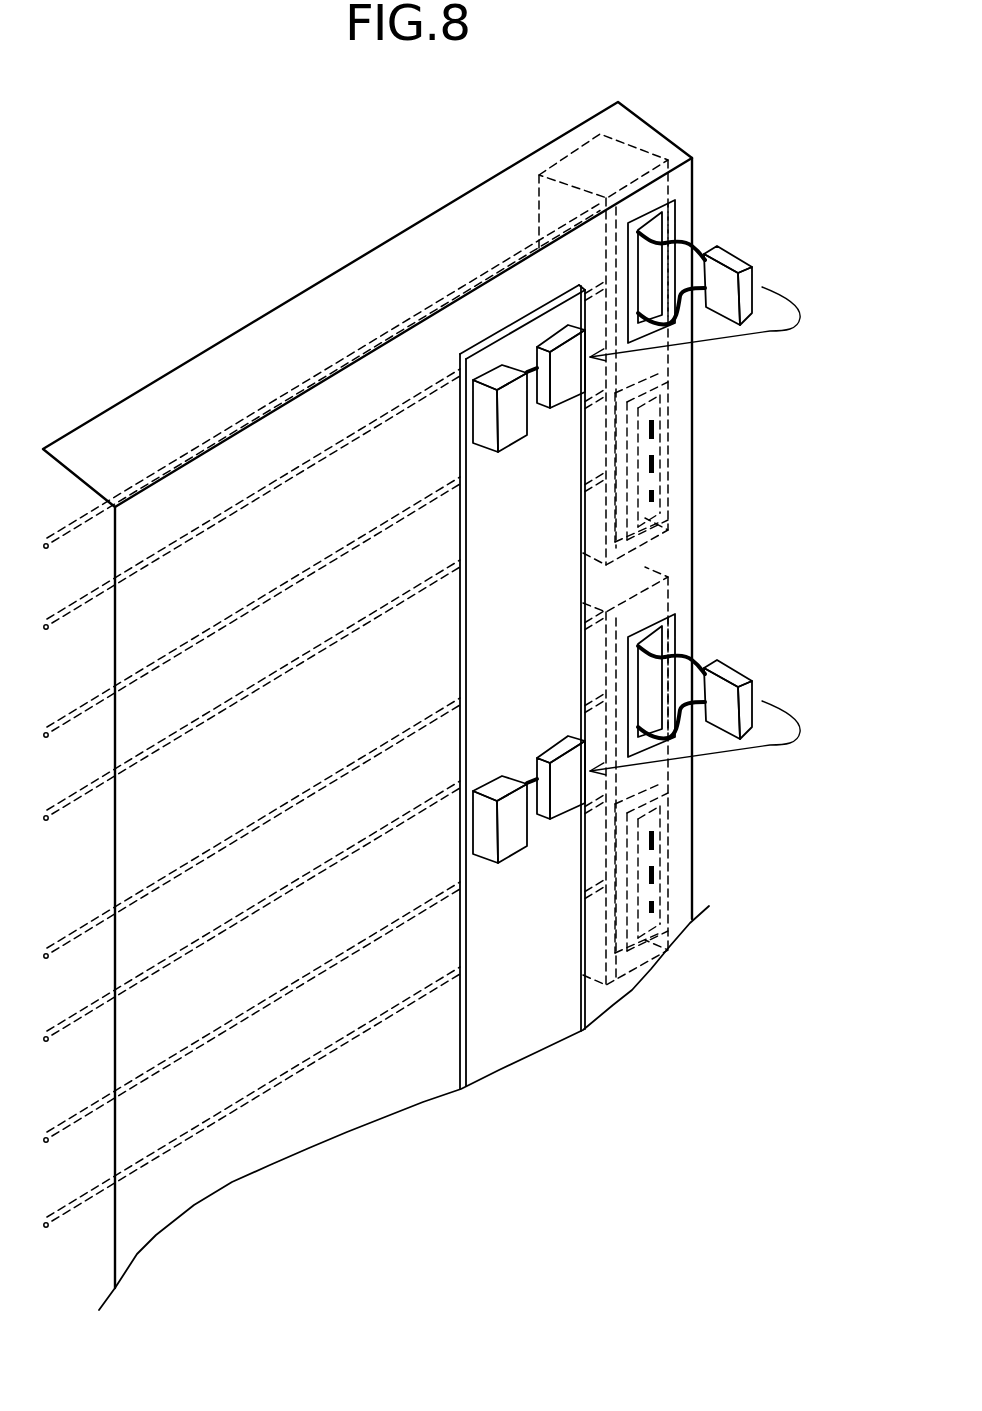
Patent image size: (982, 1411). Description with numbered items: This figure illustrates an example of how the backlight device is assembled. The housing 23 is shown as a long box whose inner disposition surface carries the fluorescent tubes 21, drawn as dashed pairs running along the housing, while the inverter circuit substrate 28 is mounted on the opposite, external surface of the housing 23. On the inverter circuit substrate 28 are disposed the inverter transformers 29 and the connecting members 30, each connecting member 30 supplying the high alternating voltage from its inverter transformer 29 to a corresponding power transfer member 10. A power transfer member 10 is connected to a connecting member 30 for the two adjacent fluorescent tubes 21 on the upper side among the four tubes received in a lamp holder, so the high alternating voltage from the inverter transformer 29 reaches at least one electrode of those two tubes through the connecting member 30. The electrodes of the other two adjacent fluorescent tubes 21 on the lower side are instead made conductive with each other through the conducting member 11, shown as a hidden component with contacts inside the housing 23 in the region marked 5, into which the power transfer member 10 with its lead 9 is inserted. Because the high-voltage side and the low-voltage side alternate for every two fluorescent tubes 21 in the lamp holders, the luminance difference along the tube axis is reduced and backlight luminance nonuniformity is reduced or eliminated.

The connector accommodating space 5 is at (612, 167).
The lead wire 9 is at (695, 243).
The power transfer member 10 is at (727, 257).
The conducting member 11 is at (658, 466).
The fluorescent tube 21 is at (65, 526).
The housing 23 is at (347, 298).
The inverter circuit substrate 28 is at (531, 1033).
The inverter transformer 29 is at (512, 447).
The connecting member 30 is at (561, 405).